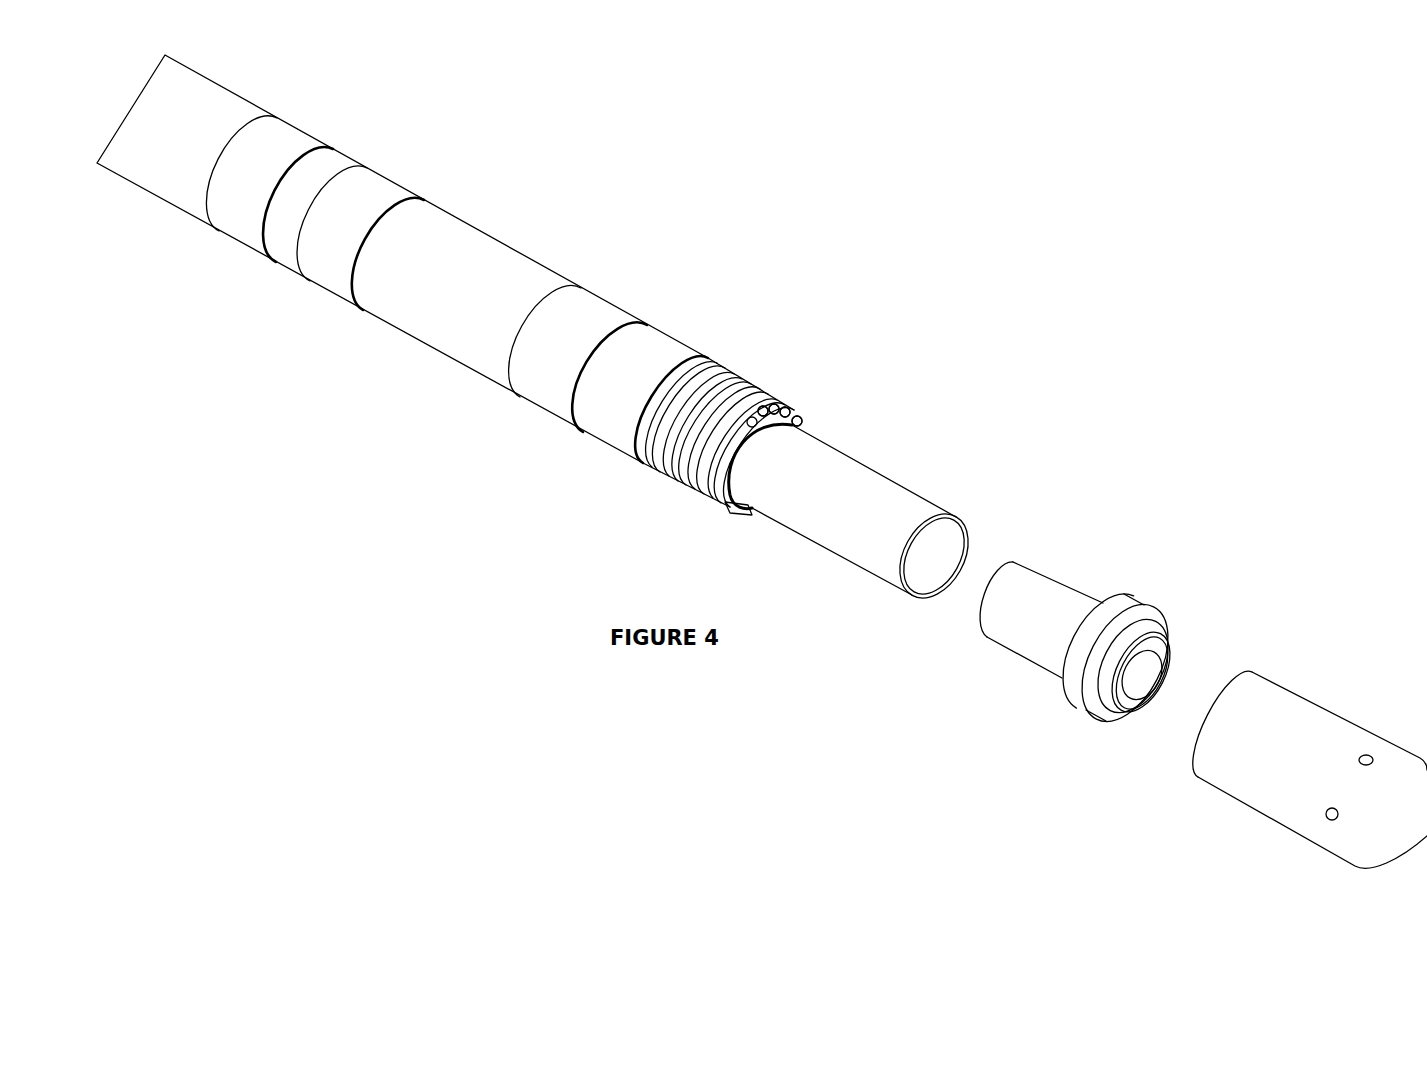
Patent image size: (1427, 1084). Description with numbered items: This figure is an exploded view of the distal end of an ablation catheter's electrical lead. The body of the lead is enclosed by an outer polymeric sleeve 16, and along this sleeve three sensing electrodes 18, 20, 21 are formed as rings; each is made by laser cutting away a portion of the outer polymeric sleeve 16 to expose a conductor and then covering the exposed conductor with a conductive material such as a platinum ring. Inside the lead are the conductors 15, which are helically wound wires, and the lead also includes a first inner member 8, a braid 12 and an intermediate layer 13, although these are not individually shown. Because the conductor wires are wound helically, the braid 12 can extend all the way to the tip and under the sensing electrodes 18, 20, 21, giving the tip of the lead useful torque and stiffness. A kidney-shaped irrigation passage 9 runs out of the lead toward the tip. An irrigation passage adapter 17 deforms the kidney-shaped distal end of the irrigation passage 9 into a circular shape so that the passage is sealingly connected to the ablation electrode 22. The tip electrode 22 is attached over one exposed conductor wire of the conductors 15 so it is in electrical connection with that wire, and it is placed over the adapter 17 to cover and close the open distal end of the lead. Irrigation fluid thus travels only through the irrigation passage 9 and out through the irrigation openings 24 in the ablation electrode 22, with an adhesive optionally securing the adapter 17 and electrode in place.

The first inner member 8 is at (793, 413).
The irrigation passage 9 is at (917, 493).
The braid 12 is at (768, 410).
The intermediate layer 13 is at (791, 416).
The conductor wires 15 is at (748, 380).
The outer polymeric sleeve 16 is at (513, 247).
The irrigation passage adapter 17 is at (1140, 597).
The sensing electrode 18 is at (229, 242).
The sensing electrode 20 is at (325, 294).
The sensing electrode 21 is at (527, 408).
The ablation electrode 22 is at (1347, 712).
The irrigation openings 24 is at (1368, 766).